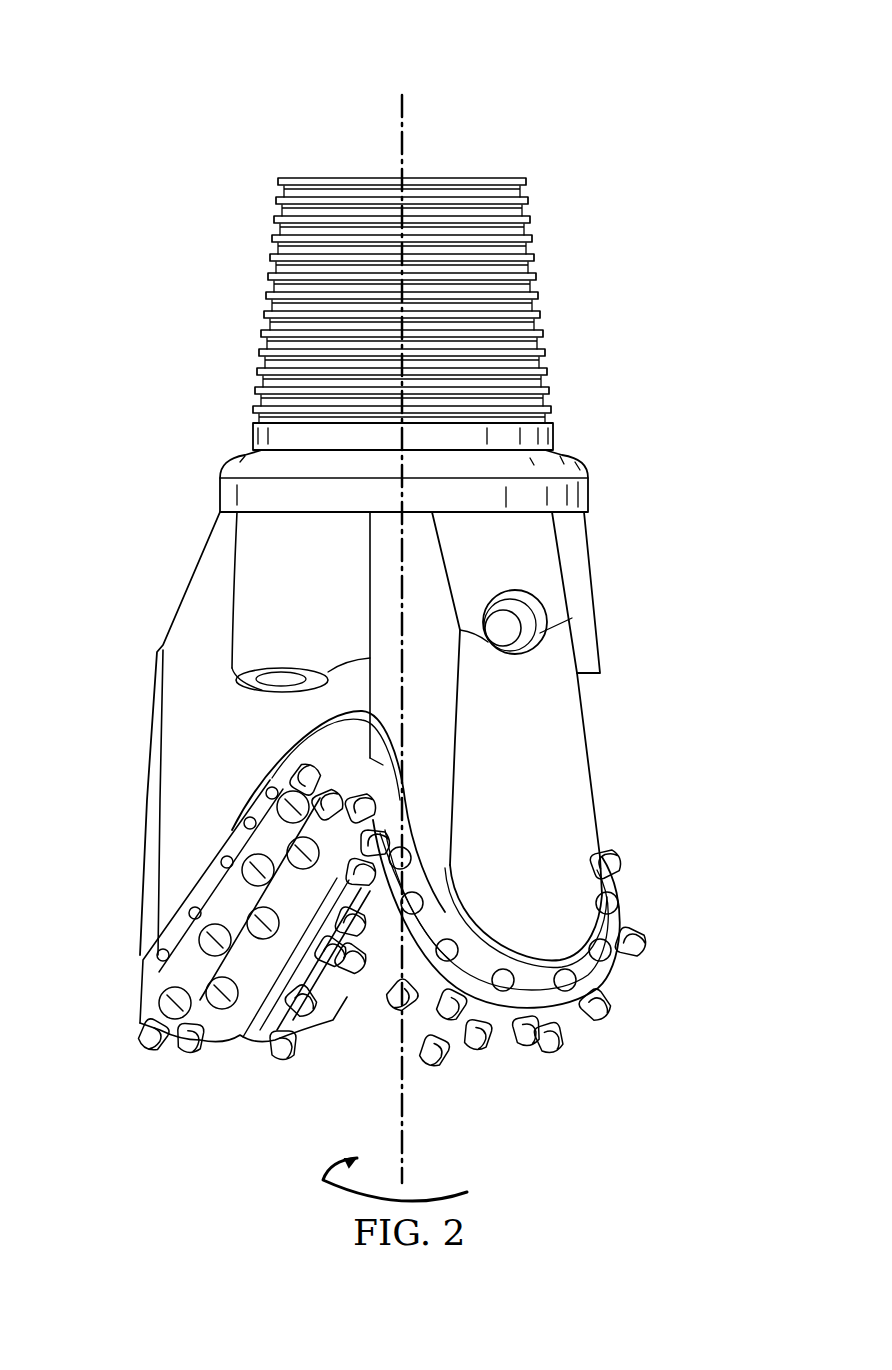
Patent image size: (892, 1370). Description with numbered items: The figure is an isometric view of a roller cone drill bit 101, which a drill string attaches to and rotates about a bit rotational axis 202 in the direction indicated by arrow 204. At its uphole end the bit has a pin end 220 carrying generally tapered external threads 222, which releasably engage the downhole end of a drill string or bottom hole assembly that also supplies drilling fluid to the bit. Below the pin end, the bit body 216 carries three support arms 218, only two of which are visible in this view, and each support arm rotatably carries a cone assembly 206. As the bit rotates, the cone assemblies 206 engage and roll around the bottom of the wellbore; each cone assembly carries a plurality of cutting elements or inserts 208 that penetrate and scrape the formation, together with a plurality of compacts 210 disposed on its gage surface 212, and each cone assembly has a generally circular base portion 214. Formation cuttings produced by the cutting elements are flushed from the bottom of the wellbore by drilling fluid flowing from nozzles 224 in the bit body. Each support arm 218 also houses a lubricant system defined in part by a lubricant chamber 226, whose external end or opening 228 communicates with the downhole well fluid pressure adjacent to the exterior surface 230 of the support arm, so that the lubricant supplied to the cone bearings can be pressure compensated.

The roller cone drill bit 101 is at (695, 560).
The bit rotational axis 202 is at (402, 100).
The arrow 204 is at (322, 1180).
The cone assembly 206 is at (235, 1072).
The cutting elements or inserts 208 is at (147, 1047).
The compacts 210 is at (252, 820).
The gage surface 212 is at (180, 935).
The circular base portion 214 is at (138, 965).
The bit body 216 is at (157, 572).
The support arm 218 is at (148, 727).
The pin end 220 is at (550, 260).
The external threads 222 is at (277, 262).
The nozzle 224 is at (282, 683).
The lubricant chamber 226 is at (548, 648).
The external end or opening 228 is at (545, 605).
The exterior surface 230 is at (540, 770).